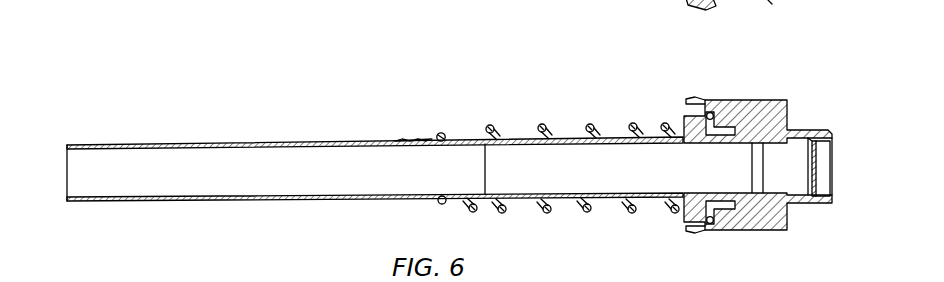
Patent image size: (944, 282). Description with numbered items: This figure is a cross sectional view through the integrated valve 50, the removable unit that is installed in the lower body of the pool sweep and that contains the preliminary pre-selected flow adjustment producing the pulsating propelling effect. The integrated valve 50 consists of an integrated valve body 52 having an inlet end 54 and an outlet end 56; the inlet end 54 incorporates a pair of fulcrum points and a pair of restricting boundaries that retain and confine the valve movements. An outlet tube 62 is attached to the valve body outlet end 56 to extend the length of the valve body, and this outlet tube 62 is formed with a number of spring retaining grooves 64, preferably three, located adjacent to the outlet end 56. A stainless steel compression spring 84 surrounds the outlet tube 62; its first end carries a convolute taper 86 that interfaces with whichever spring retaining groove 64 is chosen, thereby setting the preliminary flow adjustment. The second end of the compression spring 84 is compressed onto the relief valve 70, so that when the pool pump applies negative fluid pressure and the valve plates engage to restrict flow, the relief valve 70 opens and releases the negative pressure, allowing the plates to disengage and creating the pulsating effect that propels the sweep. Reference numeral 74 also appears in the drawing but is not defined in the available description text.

The integrated valve 50 is at (214, 105).
The integrated valve body 52 is at (724, 99).
The inlet end 54 is at (835, 184).
The outlet end 56 is at (67, 160).
The outlet tube 62 is at (360, 141).
The spring retaining grooves 64 is at (405, 199).
The compression spring 84 is at (585, 212).
The convolute taper 86 is at (442, 133).
The relief valve 70 is at (205, 281).
The adjacent figure element 74 is at (580, 2).